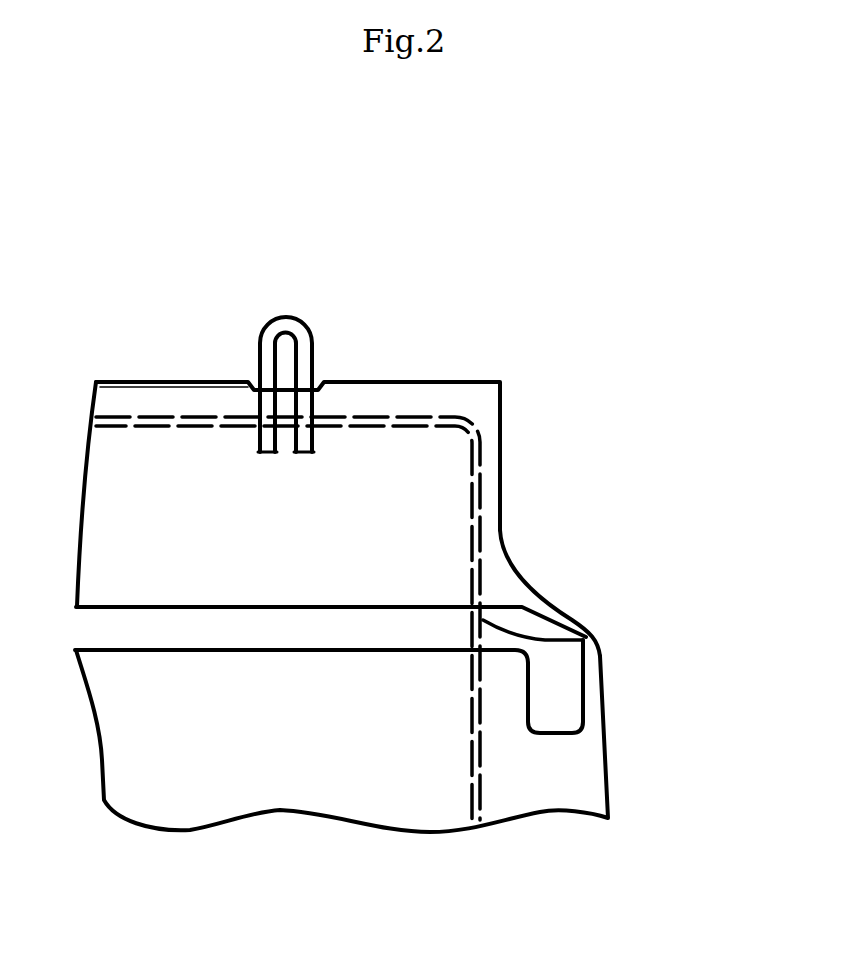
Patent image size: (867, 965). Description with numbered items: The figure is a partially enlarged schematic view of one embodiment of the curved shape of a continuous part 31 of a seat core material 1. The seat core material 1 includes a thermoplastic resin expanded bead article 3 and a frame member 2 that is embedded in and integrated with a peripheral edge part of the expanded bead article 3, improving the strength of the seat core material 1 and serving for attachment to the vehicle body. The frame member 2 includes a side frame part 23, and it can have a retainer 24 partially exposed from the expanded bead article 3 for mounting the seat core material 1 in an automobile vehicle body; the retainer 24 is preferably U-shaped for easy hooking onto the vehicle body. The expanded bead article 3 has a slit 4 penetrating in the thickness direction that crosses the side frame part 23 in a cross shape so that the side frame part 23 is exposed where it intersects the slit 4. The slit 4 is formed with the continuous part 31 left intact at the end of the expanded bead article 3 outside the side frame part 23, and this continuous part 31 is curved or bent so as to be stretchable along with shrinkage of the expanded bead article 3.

The seat core material 1 is at (452, 298).
The frame member 2 is at (477, 385).
The thermoplastic resin expanded bead article 3 is at (435, 778).
The slit 4 is at (385, 632).
The side frame part 23 is at (597, 637).
The retainer 24 is at (286, 320).
The continuous part 31 is at (565, 615).